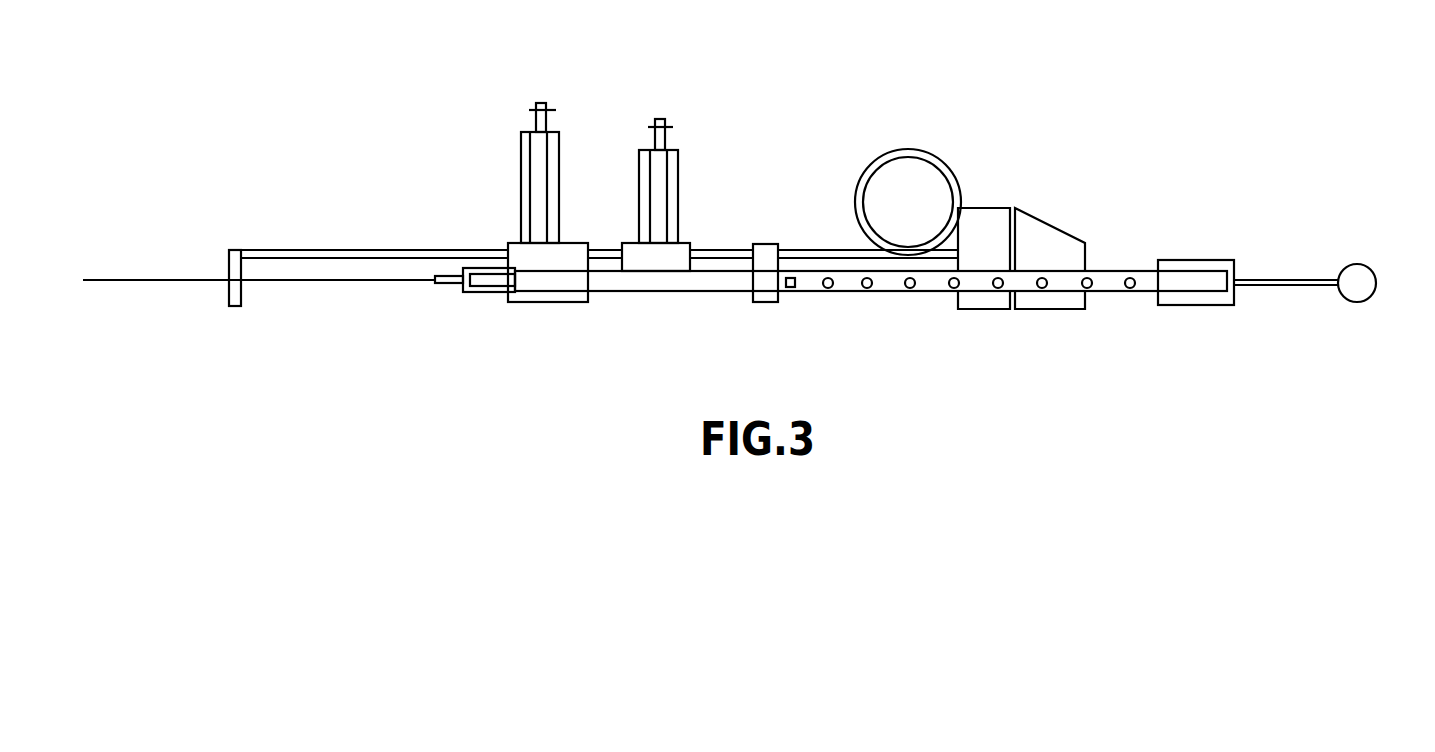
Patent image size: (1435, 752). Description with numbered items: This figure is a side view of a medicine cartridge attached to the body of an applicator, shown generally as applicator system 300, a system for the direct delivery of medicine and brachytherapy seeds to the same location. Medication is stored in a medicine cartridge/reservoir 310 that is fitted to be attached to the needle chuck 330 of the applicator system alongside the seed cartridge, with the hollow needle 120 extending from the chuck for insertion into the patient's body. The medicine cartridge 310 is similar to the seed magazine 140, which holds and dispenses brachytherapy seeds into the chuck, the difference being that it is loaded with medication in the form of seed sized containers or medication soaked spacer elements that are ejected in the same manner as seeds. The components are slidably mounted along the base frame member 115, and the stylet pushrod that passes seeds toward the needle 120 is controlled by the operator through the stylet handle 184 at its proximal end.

The applicator system 300 is at (1112, 106).
The medicine cartridge/reservoir 310 is at (521, 101).
The magazine 140 is at (699, 120).
The needle chuck 330 is at (680, 252).
The base frame member 115 is at (280, 250).
The hollow needle 120 is at (172, 280).
The stylet handle 184 is at (1361, 300).